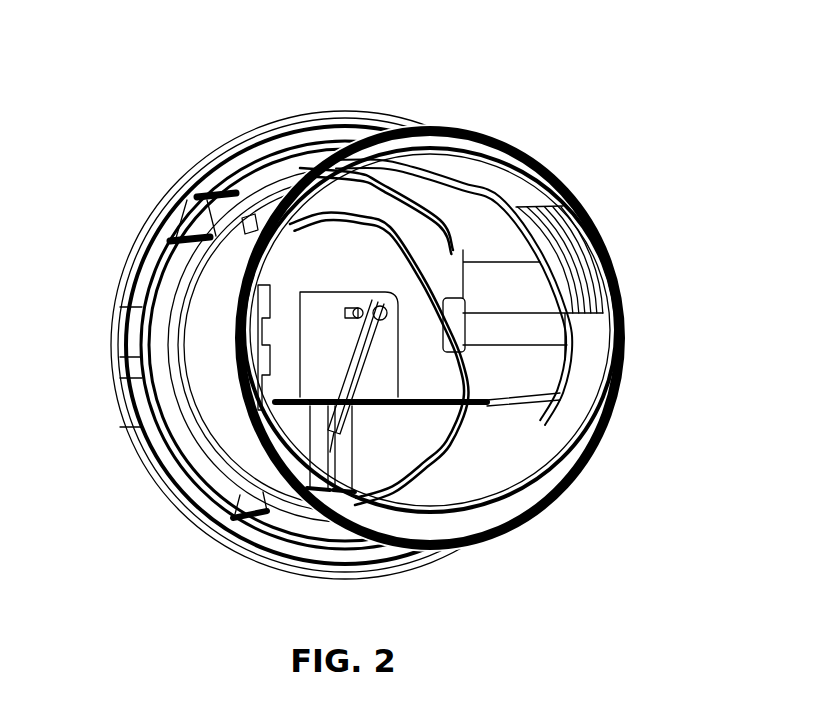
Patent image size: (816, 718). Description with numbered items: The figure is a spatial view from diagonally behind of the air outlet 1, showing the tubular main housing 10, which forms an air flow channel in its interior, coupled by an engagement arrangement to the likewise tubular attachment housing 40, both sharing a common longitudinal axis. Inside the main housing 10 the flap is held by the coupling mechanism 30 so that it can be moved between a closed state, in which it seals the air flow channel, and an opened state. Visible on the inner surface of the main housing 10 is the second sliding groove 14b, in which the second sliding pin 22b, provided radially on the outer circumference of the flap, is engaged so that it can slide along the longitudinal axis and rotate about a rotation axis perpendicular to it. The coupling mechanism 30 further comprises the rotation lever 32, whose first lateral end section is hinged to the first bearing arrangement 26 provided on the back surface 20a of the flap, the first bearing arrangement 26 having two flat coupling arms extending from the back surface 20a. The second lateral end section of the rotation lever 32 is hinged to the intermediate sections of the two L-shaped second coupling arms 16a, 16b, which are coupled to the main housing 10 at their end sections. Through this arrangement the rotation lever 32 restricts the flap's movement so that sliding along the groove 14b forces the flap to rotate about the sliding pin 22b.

The air outlet 1 is at (609, 159).
The main housing 10 is at (563, 469).
The second sliding groove 14b is at (533, 333).
The second coupling arm 16a is at (485, 437).
The second coupling arm 16b is at (377, 393).
The back surface of the flap 20a is at (287, 252).
The second sliding pin 22b is at (470, 348).
The first bearing arrangement 26 is at (337, 277).
The coupling mechanism 30 is at (562, 393).
The rotation lever 32 is at (365, 468).
The attachment housing 40 is at (600, 354).